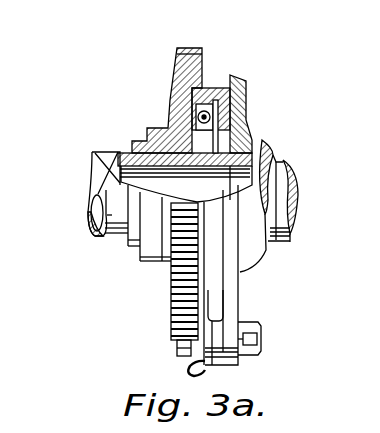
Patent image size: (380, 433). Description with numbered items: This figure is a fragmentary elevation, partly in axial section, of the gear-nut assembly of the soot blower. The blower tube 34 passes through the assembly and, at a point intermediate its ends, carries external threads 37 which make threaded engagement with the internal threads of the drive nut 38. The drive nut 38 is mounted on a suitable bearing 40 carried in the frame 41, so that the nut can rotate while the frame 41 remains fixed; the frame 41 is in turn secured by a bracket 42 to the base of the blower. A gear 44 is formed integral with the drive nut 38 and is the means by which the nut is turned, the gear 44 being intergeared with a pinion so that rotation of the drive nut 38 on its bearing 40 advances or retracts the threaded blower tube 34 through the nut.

The blower tube 34 is at (280, 162).
The external threads 37 is at (131, 150).
The drive nut 38 is at (168, 117).
The bearing 40 is at (209, 116).
The frame 41 is at (233, 295).
The bracket 42 is at (204, 373).
The gear 44 is at (171, 327).